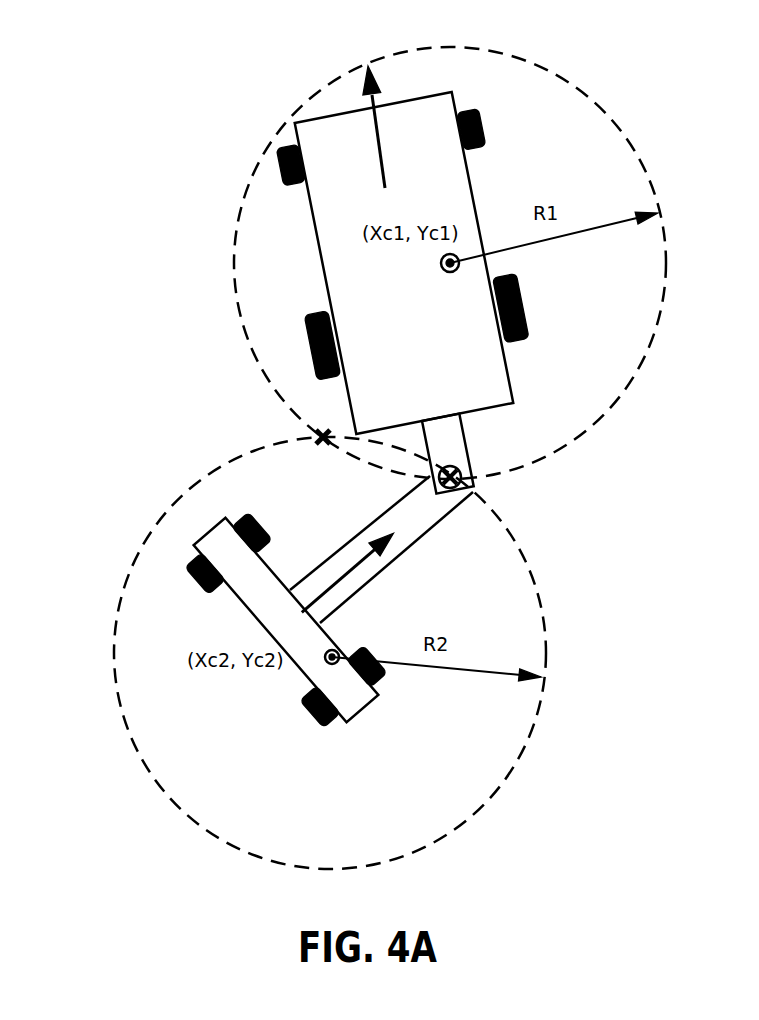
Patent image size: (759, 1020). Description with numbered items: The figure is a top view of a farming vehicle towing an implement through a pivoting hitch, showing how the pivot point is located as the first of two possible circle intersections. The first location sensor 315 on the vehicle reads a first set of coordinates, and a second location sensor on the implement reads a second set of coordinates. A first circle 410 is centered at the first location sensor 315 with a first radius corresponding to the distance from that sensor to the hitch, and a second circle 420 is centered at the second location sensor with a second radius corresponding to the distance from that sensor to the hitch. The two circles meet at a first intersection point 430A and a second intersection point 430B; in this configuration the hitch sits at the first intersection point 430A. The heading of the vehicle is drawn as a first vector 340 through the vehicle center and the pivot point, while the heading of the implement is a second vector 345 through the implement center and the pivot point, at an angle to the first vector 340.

The first circle 410 is at (297, 112).
The second circle 420 is at (547, 632).
The first intersection point 430A is at (460, 479).
The second intersection point 430B is at (318, 433).
The first vector 340 is at (387, 187).
The second vector 345 is at (327, 588).
The first location sensor 315 is at (441, 264).